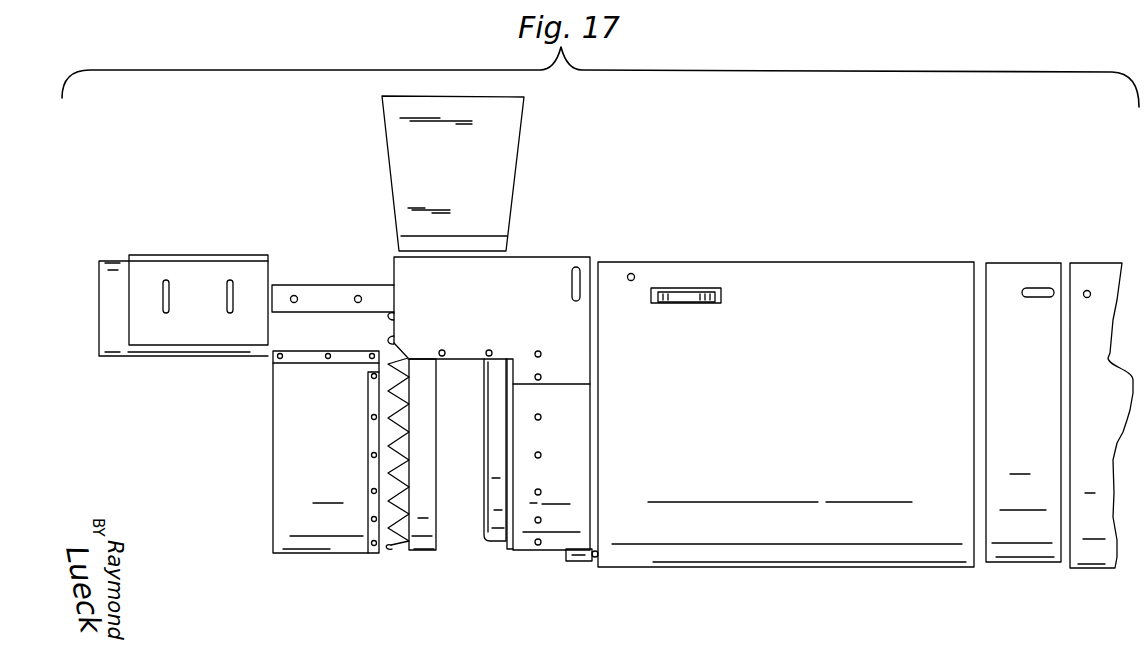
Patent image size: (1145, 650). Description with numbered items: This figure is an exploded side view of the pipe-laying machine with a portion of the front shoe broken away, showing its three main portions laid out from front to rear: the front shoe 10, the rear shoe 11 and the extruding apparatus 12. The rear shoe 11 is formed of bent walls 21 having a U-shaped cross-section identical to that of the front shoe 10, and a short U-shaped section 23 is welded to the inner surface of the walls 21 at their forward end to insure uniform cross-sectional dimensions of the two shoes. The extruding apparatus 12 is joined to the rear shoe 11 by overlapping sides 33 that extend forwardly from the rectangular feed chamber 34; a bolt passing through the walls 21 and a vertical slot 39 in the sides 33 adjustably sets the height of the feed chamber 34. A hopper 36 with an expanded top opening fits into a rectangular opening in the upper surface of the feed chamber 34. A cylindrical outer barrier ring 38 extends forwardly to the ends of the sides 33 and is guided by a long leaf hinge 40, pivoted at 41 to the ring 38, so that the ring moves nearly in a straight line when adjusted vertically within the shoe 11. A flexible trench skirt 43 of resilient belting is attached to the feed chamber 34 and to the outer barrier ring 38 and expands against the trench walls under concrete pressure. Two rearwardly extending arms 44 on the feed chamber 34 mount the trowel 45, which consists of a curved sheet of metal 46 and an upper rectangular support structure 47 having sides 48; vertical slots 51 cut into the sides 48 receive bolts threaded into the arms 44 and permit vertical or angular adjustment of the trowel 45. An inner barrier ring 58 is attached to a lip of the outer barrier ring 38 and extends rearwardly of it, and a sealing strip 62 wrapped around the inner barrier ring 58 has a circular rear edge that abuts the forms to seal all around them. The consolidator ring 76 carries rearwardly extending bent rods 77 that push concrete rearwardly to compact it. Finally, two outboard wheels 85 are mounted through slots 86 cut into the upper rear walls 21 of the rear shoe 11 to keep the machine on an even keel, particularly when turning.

The front shoe 10 is at (1092, 261).
The rear shoe 11 is at (742, 254).
The extruding apparatus 12 is at (532, 251).
The walls 21 is at (810, 312).
The U-shaped section 23 is at (1013, 270).
The sides 33 is at (583, 325).
The feed chamber 34 is at (467, 309).
The hopper 36 is at (509, 177).
The outer barrier ring 38 is at (567, 543).
The vertical slot 39 is at (572, 289).
The leaf hinge 40 is at (593, 550).
The pivot 41 is at (600, 553).
The trench skirt 43 is at (280, 455).
The arms 44 is at (315, 292).
The trowel 45 is at (173, 256).
The curved sheet of metal 46 is at (103, 300).
The support structure 47 is at (252, 256).
The sides 48 is at (200, 290).
The slots 51 is at (168, 312).
The inner barrier ring 58 is at (510, 537).
The sealing strip 62 is at (493, 542).
The consolidator ring 76 is at (432, 553).
The bent rods 77 is at (394, 553).
The outboard wheels 85 is at (705, 288).
The slots 86 is at (653, 305).